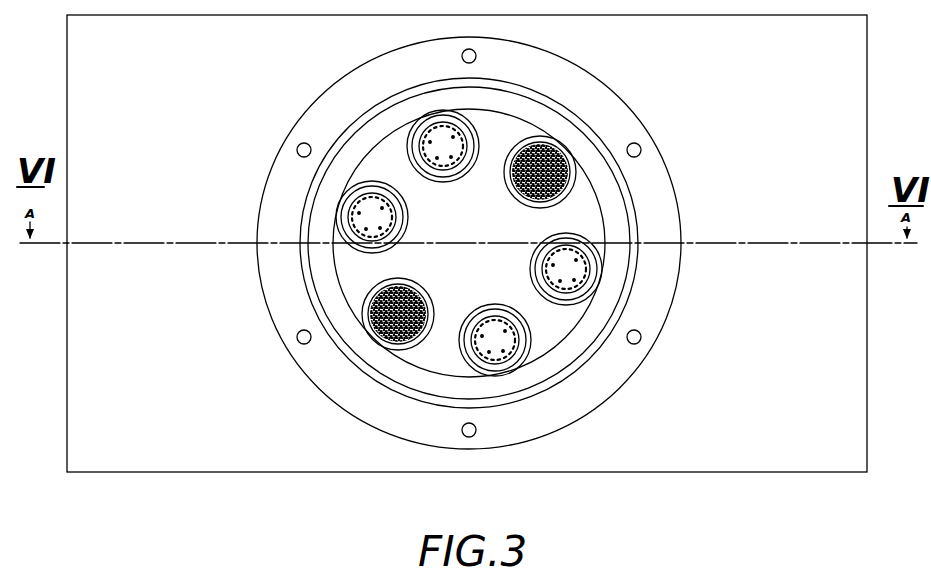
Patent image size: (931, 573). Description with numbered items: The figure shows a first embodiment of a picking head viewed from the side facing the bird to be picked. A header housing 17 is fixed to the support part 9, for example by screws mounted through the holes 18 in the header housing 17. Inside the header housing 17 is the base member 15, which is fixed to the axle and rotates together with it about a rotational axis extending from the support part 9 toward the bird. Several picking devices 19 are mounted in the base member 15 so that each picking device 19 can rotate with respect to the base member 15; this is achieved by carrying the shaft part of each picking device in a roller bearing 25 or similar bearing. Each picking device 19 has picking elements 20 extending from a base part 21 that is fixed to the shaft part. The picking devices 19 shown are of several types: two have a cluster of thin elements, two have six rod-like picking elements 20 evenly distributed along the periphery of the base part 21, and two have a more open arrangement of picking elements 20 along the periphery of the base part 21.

The support part 9 is at (736, 447).
The base member 15 is at (490, 293).
The header housing 17 is at (340, 383).
The holes 18 is at (299, 143).
The picking device 19 is at (560, 159).
The picking elements 20 is at (372, 225).
The base part 21 is at (343, 217).
The roller bearing 25 is at (369, 183).